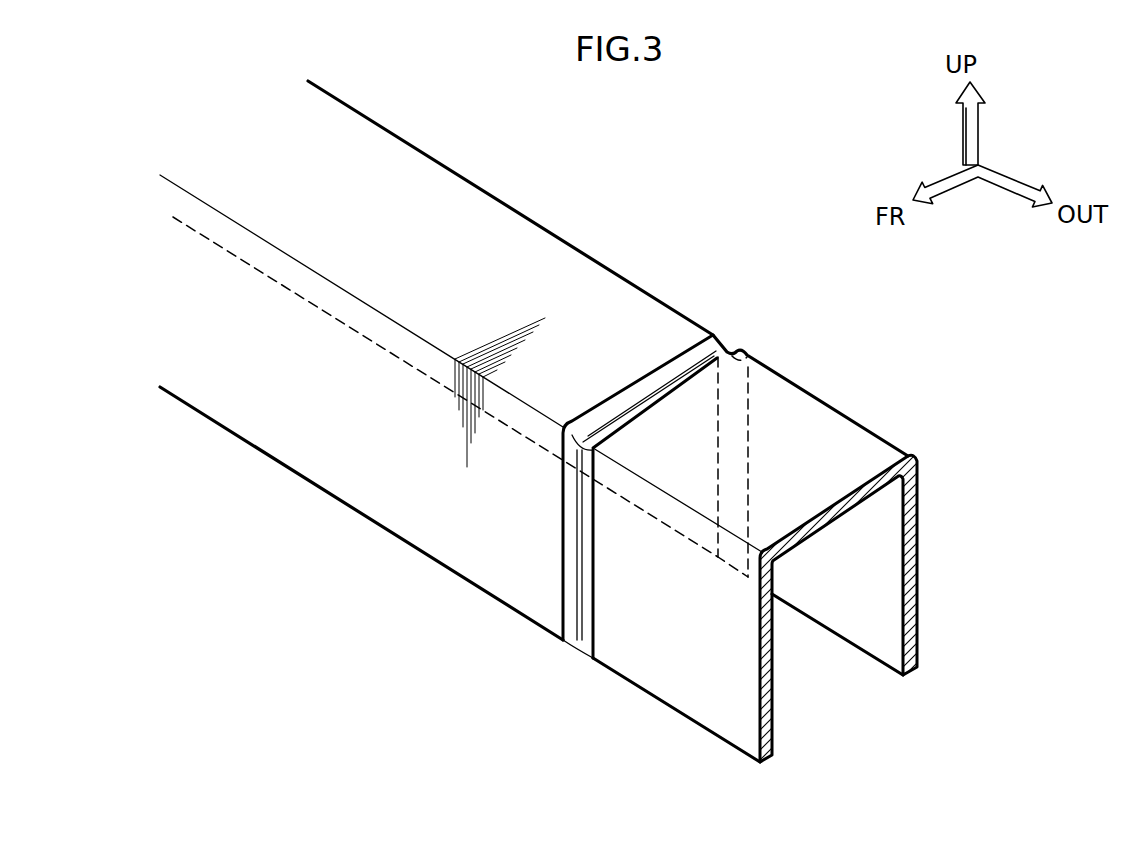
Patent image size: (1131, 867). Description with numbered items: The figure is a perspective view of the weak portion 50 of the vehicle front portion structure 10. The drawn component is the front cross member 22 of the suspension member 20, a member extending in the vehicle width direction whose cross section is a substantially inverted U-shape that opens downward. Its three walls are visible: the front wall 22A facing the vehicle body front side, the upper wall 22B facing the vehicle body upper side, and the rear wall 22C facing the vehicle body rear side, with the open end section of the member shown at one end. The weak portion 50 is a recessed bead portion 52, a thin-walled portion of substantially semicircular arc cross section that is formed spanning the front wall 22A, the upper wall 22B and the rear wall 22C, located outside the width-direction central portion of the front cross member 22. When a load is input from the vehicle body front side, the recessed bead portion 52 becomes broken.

The vehicle front portion structure 10 is at (533, 697).
The suspension member 20 is at (295, 518).
The front cross member 22 is at (410, 550).
The front wall 22A is at (512, 588).
The upper wall 22B is at (547, 260).
The rear wall 22C is at (887, 653).
The weak portion 50 is at (692, 355).
The recessed bead portion 52 is at (572, 620).